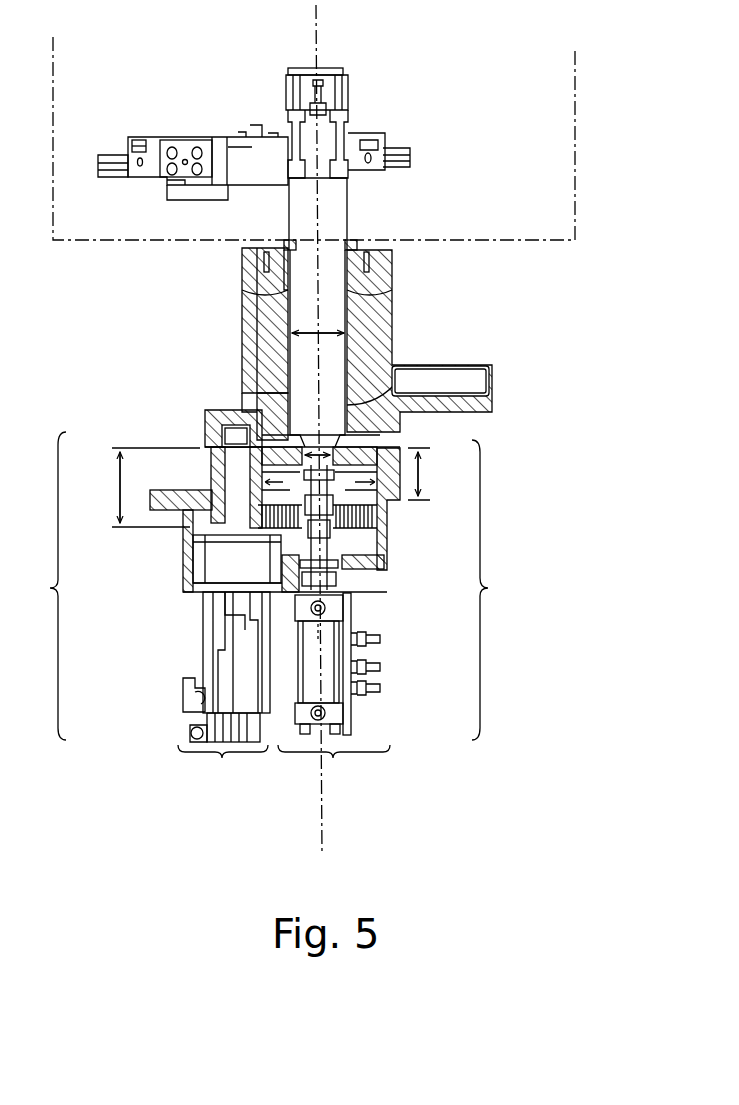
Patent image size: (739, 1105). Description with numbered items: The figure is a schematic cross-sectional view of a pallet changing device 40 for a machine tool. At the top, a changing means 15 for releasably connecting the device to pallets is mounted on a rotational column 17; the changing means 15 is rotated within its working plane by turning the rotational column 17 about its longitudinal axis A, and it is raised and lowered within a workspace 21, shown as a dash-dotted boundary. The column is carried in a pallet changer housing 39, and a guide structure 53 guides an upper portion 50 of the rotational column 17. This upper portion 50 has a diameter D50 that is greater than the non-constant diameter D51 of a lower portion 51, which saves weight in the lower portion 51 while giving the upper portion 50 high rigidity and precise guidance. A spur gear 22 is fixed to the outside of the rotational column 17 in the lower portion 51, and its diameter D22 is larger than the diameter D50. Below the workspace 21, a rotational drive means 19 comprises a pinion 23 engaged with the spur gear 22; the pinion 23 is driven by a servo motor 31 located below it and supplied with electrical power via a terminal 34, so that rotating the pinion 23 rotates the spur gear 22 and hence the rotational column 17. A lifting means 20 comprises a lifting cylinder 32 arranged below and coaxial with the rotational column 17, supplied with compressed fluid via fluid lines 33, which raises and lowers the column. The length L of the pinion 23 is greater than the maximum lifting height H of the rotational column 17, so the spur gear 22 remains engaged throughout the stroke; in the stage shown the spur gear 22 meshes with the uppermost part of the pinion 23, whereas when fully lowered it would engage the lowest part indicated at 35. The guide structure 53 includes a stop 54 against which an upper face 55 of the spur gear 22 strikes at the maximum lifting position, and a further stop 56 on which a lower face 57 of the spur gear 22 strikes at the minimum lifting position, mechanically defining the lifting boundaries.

The changing means 15 is at (285, 137).
The rotational column 17 is at (330, 205).
The rotational drive means 19 is at (140, 610).
The lifting means 20 is at (401, 614).
The workspace 21 is at (578, 118).
The spur gear 22 is at (412, 436).
The pinion 23 is at (210, 460).
The servo motor 31 is at (238, 655).
The lifting cylinder 32 is at (318, 690).
The fluid lines 33 is at (380, 627).
The terminal 34 is at (188, 700).
The lowest part of the pinion 35 is at (388, 520).
The pallet changer housing 39 is at (395, 298).
The pallet changing device 40 is at (584, 349).
The upper portion 50 is at (312, 372).
The lower portion 51 is at (300, 437).
The guide structure 53 is at (395, 287).
The stop 54 is at (270, 412).
The upper face 55 is at (412, 430).
The stop 56 is at (278, 594).
The lower face 57 is at (258, 473).
The longitudinal axis A is at (318, 14).
The maximum lifting height H is at (428, 470).
The length of the pinion L is at (118, 487).
The diameter of the upper portion D50 is at (318, 363).
The diameter of the lower portion D51 is at (316, 445).
The diameter of the spur gear D22 is at (183, 548).